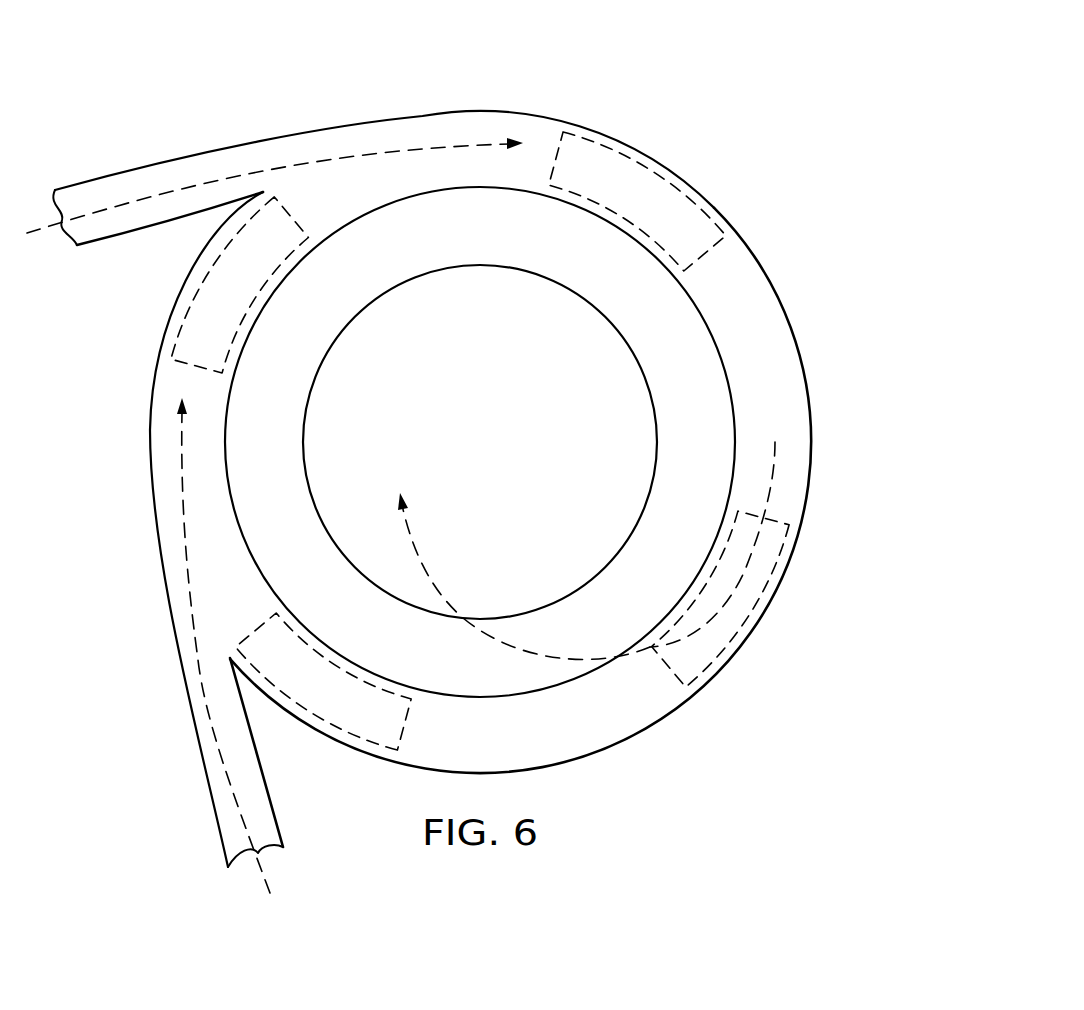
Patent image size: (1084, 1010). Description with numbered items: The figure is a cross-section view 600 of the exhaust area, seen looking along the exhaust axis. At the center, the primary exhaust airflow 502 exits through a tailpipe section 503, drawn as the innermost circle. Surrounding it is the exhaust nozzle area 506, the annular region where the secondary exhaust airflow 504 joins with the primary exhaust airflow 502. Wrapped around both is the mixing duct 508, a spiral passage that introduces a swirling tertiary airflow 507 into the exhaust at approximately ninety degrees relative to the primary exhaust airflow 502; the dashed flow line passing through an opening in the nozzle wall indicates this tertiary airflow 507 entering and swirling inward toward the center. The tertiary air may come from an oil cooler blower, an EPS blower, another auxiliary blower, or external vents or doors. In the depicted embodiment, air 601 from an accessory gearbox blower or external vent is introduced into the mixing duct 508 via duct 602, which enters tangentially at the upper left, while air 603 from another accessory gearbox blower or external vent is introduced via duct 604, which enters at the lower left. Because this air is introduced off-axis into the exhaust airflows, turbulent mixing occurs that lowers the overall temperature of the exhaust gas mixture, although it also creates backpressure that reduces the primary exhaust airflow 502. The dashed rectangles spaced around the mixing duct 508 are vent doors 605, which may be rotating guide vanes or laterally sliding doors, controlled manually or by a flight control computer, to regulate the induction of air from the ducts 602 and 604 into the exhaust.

The cross-section view 600 is at (740, 68).
The air 601 is at (360, 147).
The duct 602 is at (132, 162).
The air 603 is at (185, 562).
The duct 604 is at (202, 792).
The vent doors 605 is at (687, 197).
The mixing duct 508 is at (740, 283).
The exhaust nozzle area 506 is at (687, 343).
The tailpipe section 503 is at (628, 403).
The primary exhaust airflow 502 is at (460, 458).
The secondary exhaust airflow 504 is at (680, 577).
The tertiary airflow 507 is at (760, 537).